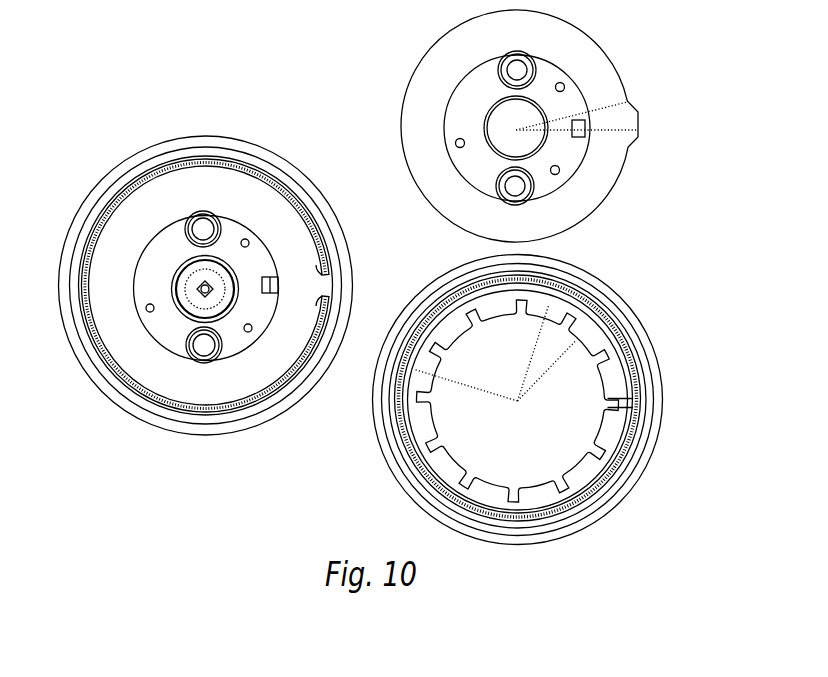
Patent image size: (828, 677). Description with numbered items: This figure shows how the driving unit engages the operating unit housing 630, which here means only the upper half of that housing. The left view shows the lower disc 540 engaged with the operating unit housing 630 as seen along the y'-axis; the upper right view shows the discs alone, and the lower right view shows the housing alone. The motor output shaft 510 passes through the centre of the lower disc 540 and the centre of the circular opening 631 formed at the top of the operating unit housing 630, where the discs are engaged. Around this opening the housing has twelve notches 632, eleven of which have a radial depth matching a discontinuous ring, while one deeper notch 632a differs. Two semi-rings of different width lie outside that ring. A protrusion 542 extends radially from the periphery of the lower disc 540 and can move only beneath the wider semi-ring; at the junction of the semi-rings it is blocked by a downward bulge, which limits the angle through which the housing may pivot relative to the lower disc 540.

The motor output shaft 510 is at (198, 289).
The lower disc 540 is at (437, 170).
The protrusion 542 is at (638, 128).
The operating unit housing 630 is at (518, 401).
The circular opening 631 is at (453, 431).
The notches 632 is at (605, 353).
The deeper notch 632a is at (634, 400).